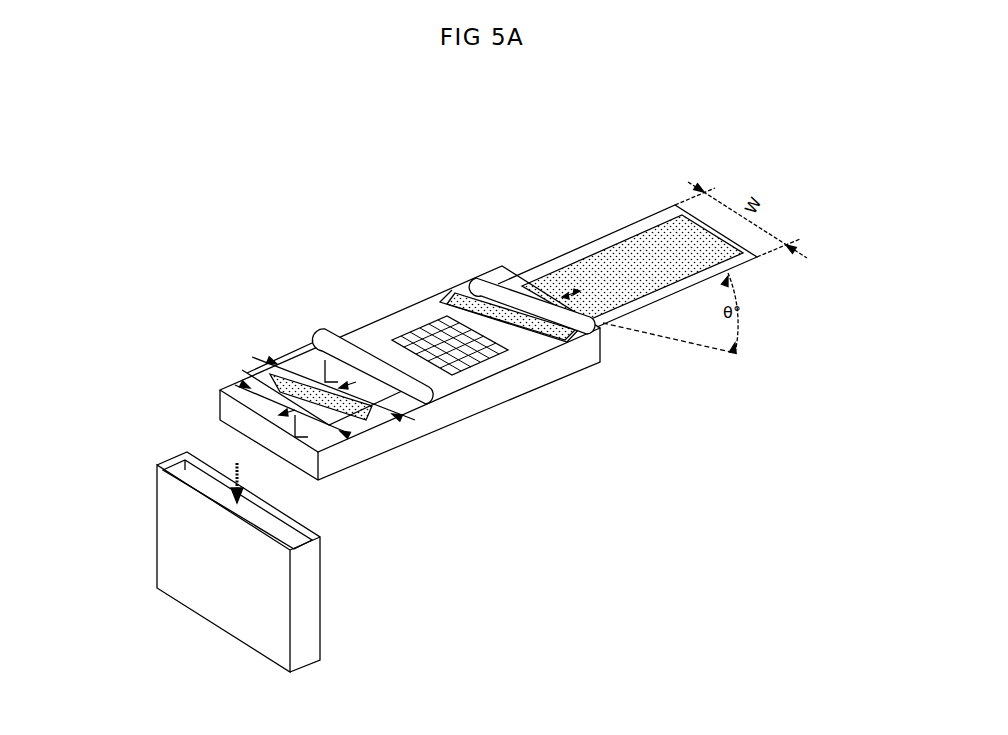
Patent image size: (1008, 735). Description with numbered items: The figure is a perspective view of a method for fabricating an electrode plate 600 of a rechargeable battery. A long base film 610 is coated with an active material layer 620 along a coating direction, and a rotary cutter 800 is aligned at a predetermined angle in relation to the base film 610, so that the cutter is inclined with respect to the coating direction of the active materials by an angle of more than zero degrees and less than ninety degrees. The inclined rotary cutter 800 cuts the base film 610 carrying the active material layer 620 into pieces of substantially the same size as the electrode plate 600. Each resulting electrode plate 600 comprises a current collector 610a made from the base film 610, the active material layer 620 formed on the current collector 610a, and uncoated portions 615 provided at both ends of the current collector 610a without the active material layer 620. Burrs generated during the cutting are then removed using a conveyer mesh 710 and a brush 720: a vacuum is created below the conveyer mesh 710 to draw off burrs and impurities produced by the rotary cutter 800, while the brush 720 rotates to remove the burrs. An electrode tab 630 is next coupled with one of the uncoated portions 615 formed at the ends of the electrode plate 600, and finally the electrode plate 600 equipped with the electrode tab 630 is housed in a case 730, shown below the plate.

The electrode plate 600 is at (388, 430).
The base film 610 is at (560, 253).
The current collector 610a is at (242, 370).
The uncoated portions 615 is at (265, 354).
The active material layer 620 is at (620, 250).
The electrode tab 630 is at (365, 428).
The conveyer mesh 710 is at (427, 323).
The brush 720 is at (328, 327).
The case 730 is at (163, 497).
The rotary cutter 800 is at (490, 267).